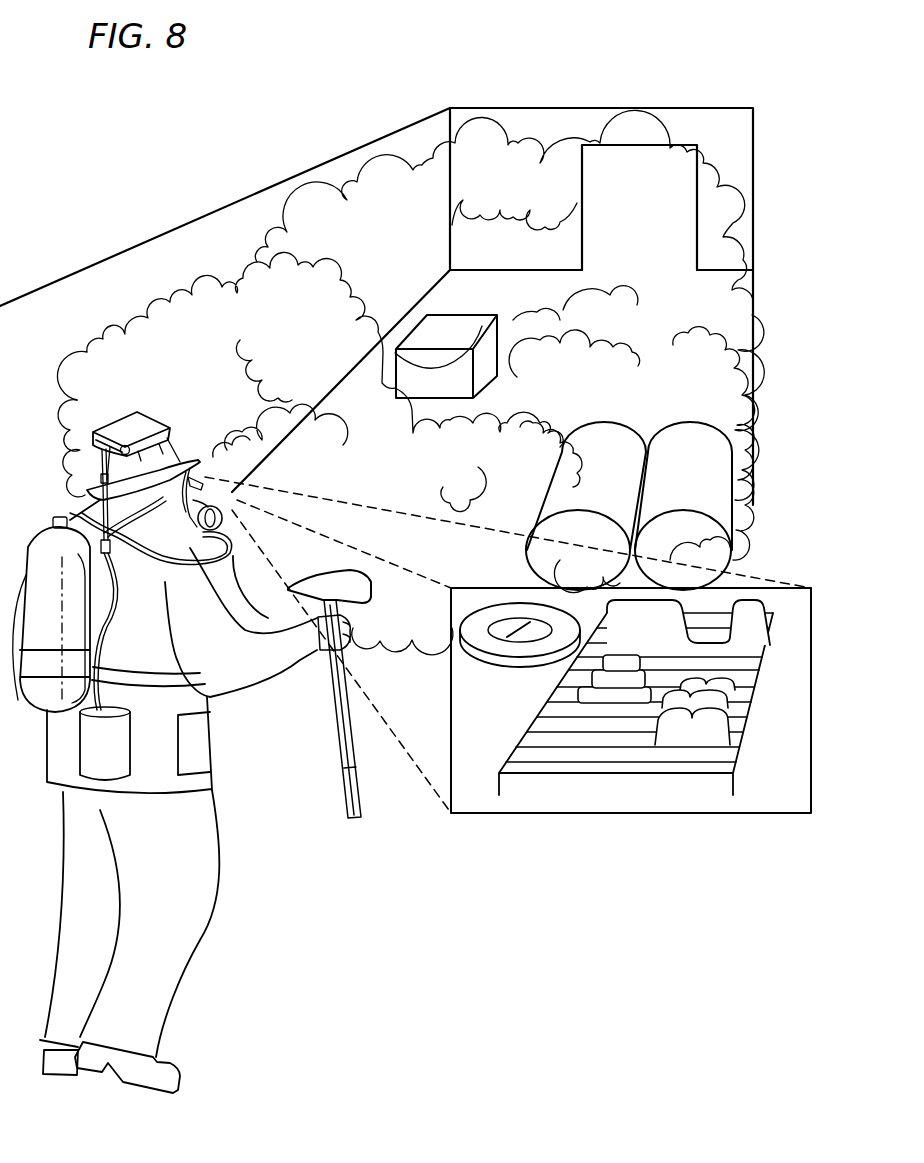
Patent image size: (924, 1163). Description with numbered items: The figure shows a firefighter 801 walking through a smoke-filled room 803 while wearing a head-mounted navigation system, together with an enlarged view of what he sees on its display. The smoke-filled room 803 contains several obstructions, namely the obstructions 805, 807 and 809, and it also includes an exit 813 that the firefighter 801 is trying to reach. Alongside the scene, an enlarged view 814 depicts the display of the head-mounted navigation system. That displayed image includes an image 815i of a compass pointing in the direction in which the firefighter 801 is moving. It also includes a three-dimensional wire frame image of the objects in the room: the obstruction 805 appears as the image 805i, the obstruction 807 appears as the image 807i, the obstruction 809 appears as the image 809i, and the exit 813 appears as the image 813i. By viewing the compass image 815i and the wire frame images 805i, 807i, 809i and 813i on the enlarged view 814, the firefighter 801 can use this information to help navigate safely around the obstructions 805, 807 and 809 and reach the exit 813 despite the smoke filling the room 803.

The firefighter 801 is at (82, 512).
The smoke-filled room 803 is at (150, 285).
The obstruction 805 is at (458, 340).
The obstruction 807 is at (621, 474).
The obstruction 809 is at (700, 474).
The exit 813 is at (602, 180).
The enlarged view of the display 814 is at (491, 856).
The image of the exit 813i is at (631, 729).
The image of obstruction 805i is at (620, 650).
The image of obstruction 807i is at (685, 682).
The image of obstruction 809i is at (735, 686).
The image of a compass 815i is at (520, 663).